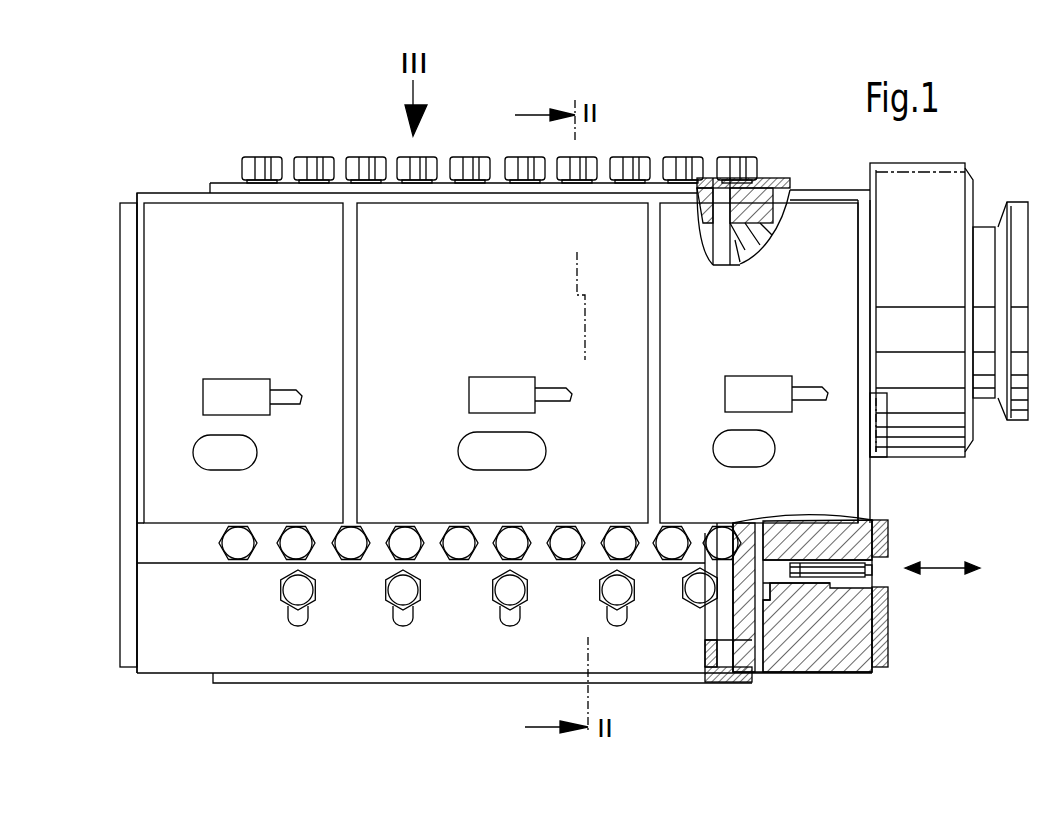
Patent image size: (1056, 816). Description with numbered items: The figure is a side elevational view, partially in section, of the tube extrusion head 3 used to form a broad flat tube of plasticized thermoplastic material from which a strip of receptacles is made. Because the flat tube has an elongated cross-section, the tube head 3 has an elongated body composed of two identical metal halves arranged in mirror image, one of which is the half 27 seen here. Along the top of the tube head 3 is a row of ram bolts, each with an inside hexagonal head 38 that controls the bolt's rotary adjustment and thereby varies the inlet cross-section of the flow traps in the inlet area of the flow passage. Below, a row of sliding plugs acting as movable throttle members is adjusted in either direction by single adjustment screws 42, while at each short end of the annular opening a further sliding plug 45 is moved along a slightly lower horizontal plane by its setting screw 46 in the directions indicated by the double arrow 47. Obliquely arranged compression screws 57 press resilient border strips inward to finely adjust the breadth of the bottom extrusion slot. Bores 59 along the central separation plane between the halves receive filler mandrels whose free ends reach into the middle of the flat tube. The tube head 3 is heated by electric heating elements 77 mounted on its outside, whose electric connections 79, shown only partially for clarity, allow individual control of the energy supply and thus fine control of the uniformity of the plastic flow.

The tube extrusion head 3 is at (262, 133).
The half of the tube head body 27 is at (143, 387).
The inside hexagonal head 38 is at (365, 167).
The adjustment screw 42 is at (294, 548).
The sliding plug 45 is at (775, 583).
The setting screw 46 is at (842, 577).
The double arrow 47 is at (943, 566).
The compression screw 57 is at (292, 590).
The bore 59 is at (722, 660).
The electric heating element 77 is at (225, 183).
The electric connection 79 is at (232, 390).